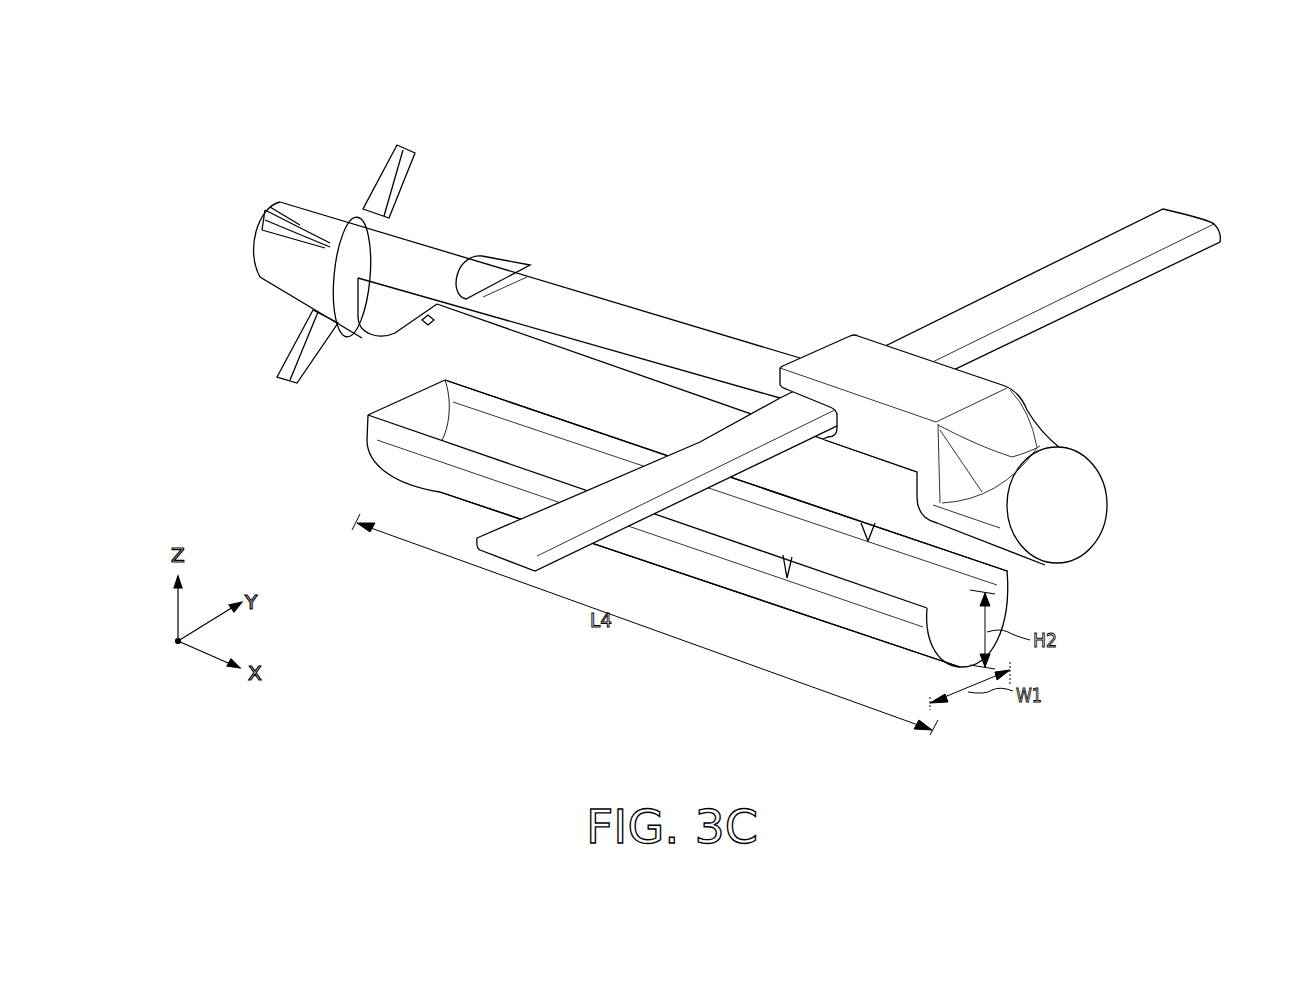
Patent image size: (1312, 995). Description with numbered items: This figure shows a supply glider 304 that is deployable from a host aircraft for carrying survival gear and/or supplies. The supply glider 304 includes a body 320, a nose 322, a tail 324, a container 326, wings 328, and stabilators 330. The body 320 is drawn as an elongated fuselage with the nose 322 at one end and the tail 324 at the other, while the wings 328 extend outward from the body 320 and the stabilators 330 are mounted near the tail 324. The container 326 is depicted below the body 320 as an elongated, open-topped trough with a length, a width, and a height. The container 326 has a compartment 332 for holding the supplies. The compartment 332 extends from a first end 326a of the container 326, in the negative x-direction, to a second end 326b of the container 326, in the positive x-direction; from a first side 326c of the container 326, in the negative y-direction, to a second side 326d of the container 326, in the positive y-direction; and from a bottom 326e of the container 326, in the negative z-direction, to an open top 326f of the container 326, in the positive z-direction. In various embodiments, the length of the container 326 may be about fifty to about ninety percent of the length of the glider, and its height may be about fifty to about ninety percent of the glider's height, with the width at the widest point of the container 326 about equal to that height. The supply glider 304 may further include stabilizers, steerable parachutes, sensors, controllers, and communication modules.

The supply glider 304 is at (155, 150).
The body 320 is at (612, 300).
The nose 322 is at (1070, 560).
The tail 324 is at (322, 203).
The container 326 is at (845, 612).
The first end 326a is at (1008, 600).
The second end 326b is at (398, 401).
The first side 326c is at (485, 466).
The second side 326d is at (548, 418).
The bottom 326e is at (753, 597).
The open top 326f is at (768, 487).
The wings 328 is at (1175, 228).
The stabilators 330 is at (400, 171).
The compartment 332 is at (493, 410).